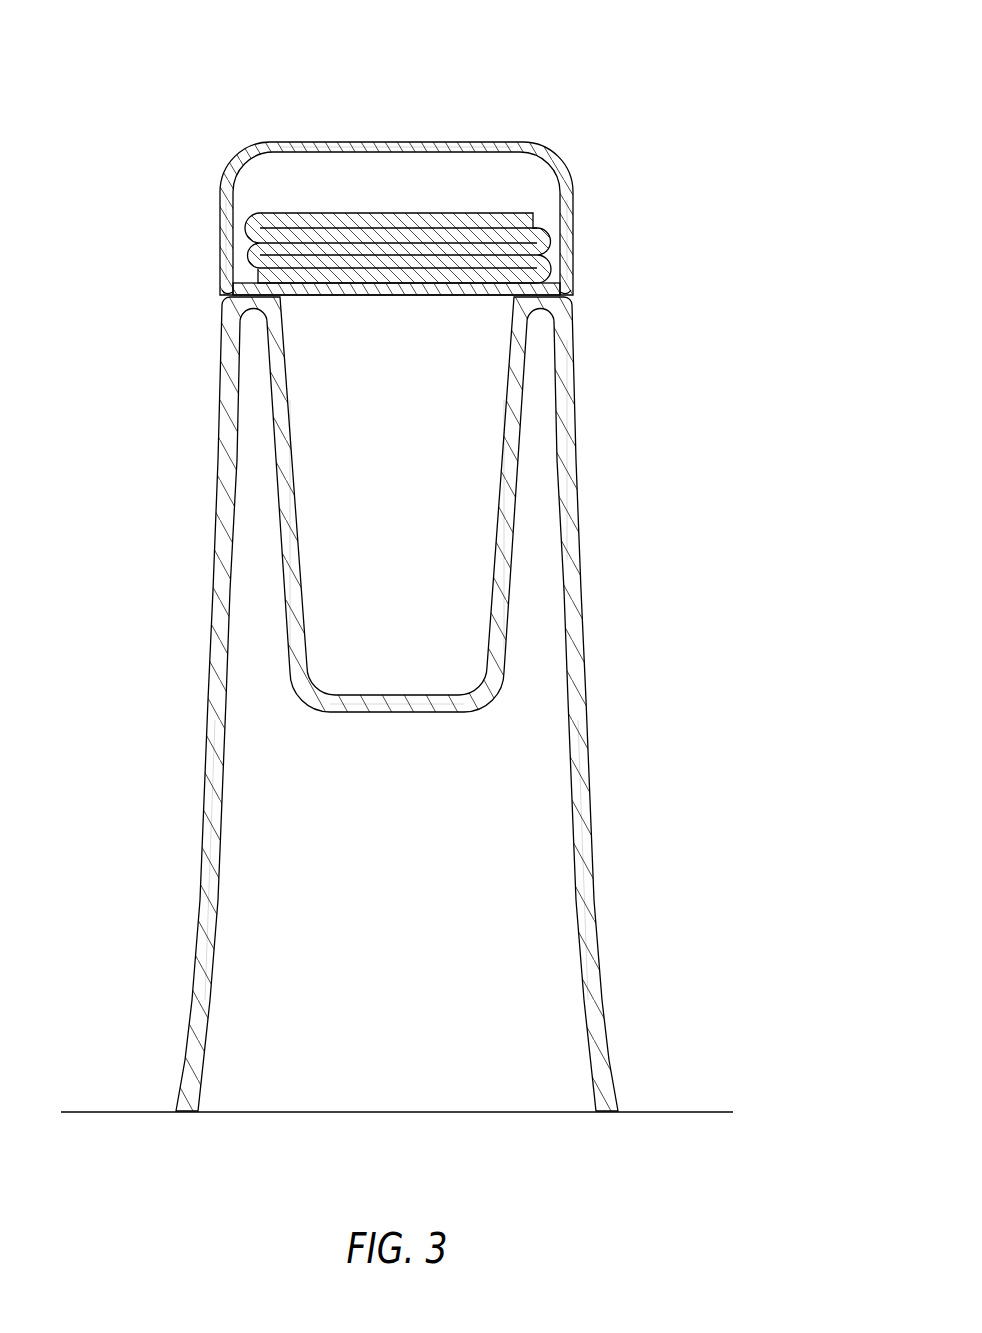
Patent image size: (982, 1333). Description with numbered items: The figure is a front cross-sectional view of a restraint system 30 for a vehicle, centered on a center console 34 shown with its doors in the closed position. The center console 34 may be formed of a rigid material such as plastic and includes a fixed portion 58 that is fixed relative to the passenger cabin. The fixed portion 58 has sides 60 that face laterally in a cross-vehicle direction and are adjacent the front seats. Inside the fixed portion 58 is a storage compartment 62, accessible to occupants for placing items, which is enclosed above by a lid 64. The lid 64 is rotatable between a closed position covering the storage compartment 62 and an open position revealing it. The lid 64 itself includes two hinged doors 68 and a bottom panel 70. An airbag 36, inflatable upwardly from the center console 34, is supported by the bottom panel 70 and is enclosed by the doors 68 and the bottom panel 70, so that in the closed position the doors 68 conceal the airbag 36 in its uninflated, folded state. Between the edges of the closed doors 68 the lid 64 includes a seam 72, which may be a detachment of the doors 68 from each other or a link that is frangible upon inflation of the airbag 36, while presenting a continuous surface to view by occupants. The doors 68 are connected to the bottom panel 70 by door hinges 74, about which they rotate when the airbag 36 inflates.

The restraint system 30 is at (448, 66).
The center console 34 is at (579, 401).
The airbag 36 is at (482, 213).
The fixed portion 58 is at (580, 498).
The sides 60 is at (208, 710).
The storage compartment 62 is at (510, 607).
The lid 64 is at (313, 141).
The hinged doors 68 is at (242, 160).
The bottom panel 70 is at (438, 297).
The seam 72 is at (397, 140).
The door hinges 74 is at (230, 284).